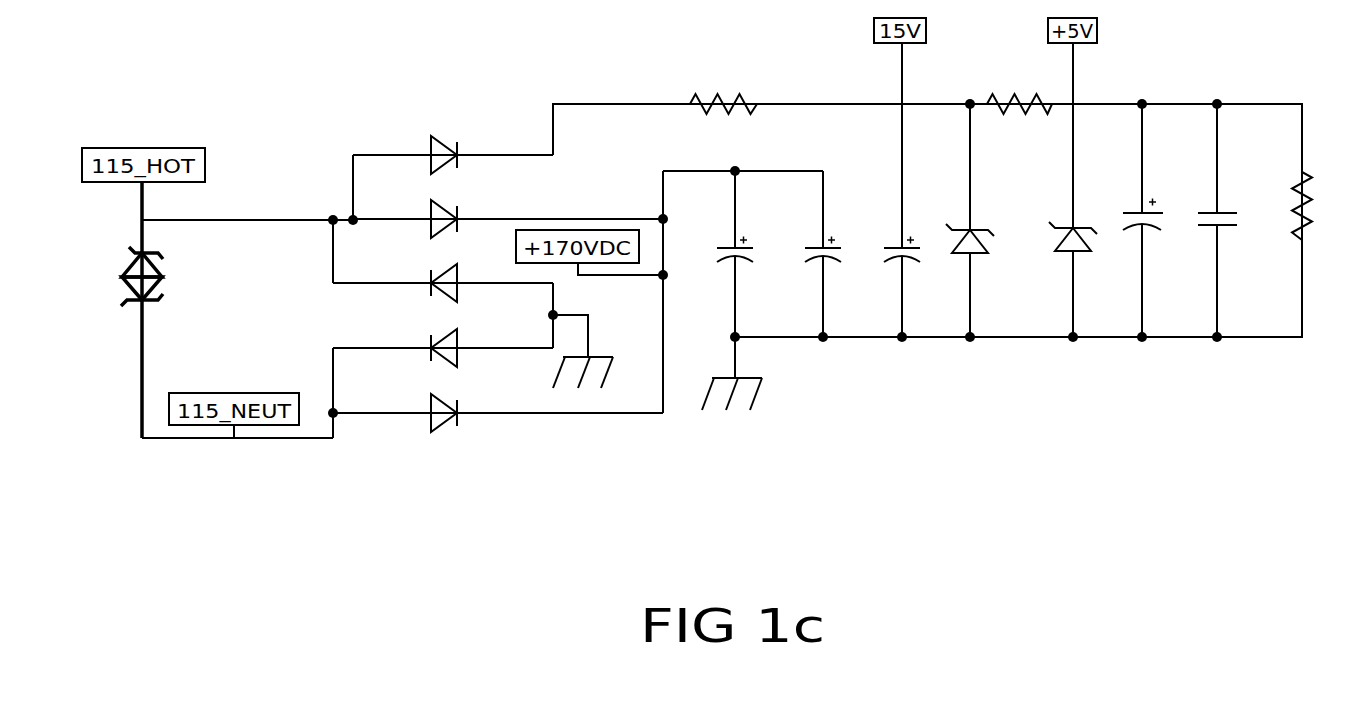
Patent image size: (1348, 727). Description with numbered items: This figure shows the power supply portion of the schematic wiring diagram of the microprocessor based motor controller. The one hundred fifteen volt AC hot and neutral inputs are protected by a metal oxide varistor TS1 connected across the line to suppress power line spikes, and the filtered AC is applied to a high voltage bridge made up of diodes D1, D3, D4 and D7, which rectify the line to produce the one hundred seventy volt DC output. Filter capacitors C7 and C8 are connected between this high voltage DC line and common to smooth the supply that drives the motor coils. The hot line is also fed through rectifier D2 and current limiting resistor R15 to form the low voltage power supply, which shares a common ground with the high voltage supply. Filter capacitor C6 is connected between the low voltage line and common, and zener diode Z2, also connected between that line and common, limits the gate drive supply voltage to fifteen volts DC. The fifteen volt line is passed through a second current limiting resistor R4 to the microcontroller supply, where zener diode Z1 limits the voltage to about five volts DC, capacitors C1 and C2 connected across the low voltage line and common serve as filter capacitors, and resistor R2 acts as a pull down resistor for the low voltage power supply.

The metal oxide varistor TS1 is at (124, 318).
The diode D1 is at (443, 280).
The rectifier D2 is at (453, 159).
The diode D3 is at (508, 223).
The diode D4 is at (443, 346).
The diode D7 is at (498, 416).
The current limiting resistor R15 is at (723, 87).
The resistor R4 is at (1019, 86).
The resistor R2 is at (1315, 190).
The filter capacitor C8 is at (726, 254).
The filter capacitor C7 is at (814, 254).
The filter capacitor C6 is at (894, 268).
The capacitor C1 is at (1138, 220).
The capacitor C2 is at (1211, 220).
The zener diode Z2 is at (968, 220).
The zener diode Z1 is at (1070, 258).